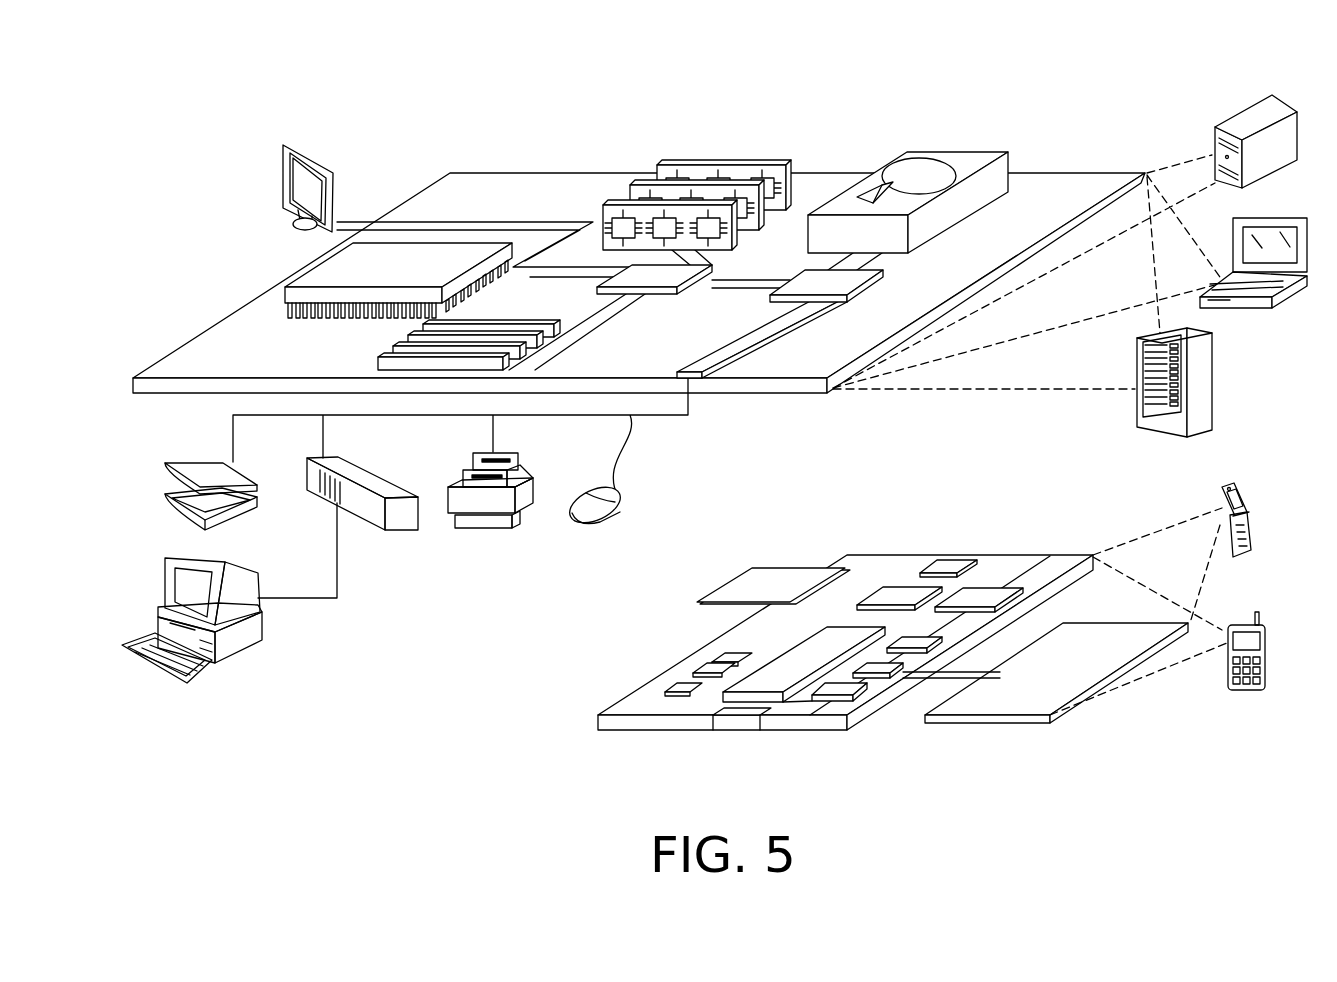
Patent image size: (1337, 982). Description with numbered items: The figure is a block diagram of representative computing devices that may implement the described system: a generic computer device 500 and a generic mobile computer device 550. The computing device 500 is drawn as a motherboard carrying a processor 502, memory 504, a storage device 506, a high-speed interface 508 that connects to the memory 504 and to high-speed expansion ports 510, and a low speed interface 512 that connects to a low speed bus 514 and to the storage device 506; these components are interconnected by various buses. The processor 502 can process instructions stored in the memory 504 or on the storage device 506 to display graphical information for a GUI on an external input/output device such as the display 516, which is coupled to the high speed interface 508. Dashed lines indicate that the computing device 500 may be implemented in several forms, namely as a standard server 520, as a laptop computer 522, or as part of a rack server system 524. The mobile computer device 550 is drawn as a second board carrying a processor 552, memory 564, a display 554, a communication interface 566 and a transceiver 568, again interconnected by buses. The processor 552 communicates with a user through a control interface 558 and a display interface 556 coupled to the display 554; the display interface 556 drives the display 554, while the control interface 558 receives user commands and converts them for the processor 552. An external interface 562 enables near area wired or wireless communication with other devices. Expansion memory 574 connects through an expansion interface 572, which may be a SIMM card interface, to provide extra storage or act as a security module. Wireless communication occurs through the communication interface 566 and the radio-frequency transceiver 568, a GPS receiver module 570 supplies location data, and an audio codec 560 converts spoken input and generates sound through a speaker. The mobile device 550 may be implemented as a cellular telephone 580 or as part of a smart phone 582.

The computing device 500 is at (402, 118).
The processor 502 is at (308, 268).
The memory 504 is at (730, 165).
The storage device 506 is at (947, 148).
The high-speed interface 508 is at (667, 275).
The high-speed expansion ports 510 is at (403, 345).
The low speed interface 512 is at (802, 277).
The low speed bus 514 is at (695, 363).
The display 516 is at (290, 145).
The standard server 520 is at (1235, 122).
The laptop computer 522 is at (1285, 217).
The rack server system 524 is at (1213, 382).
The mobile computer device 550 is at (552, 741).
The processor 552 is at (775, 670).
The display 554 is at (1095, 640).
The display interface 556 is at (847, 692).
The control interface 558 is at (883, 665).
The audio codec 560 is at (918, 637).
The external interface 562 is at (738, 717).
The memory 564 is at (690, 673).
The communication interface 566 is at (900, 587).
The transceiver 568 is at (985, 588).
The GPS receiver module 570 is at (947, 562).
The expansion interface 572 is at (828, 565).
The expansion memory 574 is at (752, 565).
The cellular telephone 580 is at (1228, 482).
The smart phone 582 is at (1240, 623).